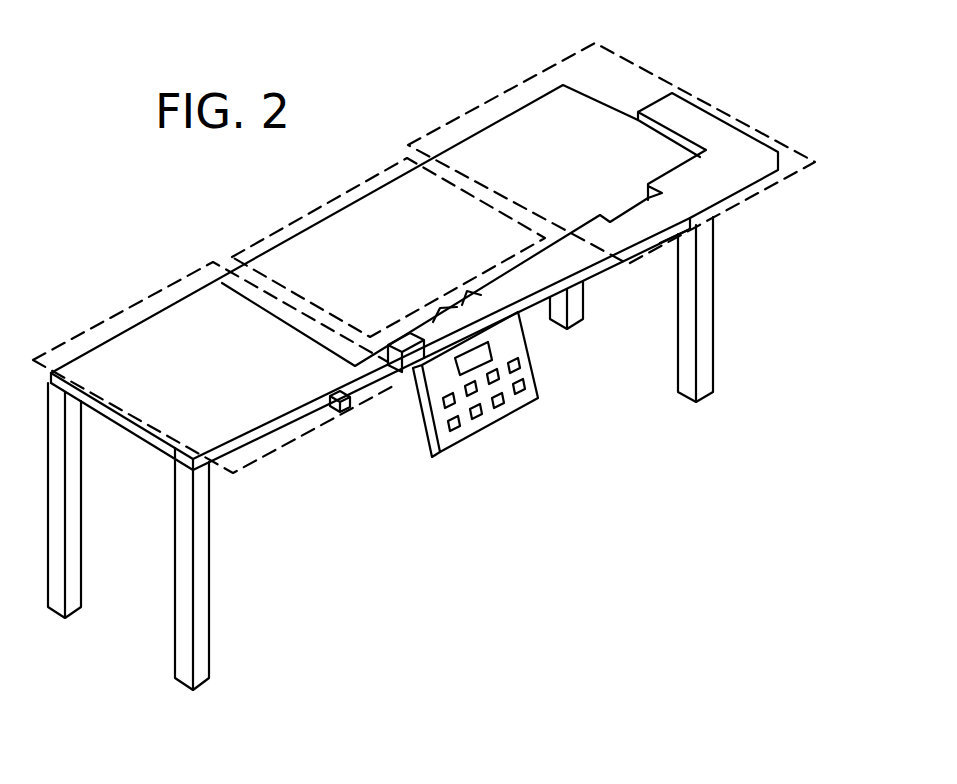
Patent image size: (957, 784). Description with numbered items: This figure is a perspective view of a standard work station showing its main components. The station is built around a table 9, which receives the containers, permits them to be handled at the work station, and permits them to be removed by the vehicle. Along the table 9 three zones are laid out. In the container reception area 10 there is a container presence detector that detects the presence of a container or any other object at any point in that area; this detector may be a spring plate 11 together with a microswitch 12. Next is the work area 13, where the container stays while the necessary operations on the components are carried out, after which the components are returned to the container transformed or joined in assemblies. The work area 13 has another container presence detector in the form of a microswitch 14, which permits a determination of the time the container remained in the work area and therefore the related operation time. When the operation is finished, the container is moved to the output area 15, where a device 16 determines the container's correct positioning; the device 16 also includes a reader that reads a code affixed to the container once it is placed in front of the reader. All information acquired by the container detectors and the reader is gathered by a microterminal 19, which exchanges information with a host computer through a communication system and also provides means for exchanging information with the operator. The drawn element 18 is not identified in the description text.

The table 9 is at (708, 288).
The container reception area 10 is at (100, 322).
The spring plate 11 is at (184, 302).
The microswitch 12 is at (343, 410).
The work area 13 is at (303, 217).
The microswitch 14 is at (425, 333).
The output area 15 is at (511, 92).
The device 16 is at (693, 120).
The leg mount 18 is at (697, 230).
The microterminal 19 is at (493, 415).